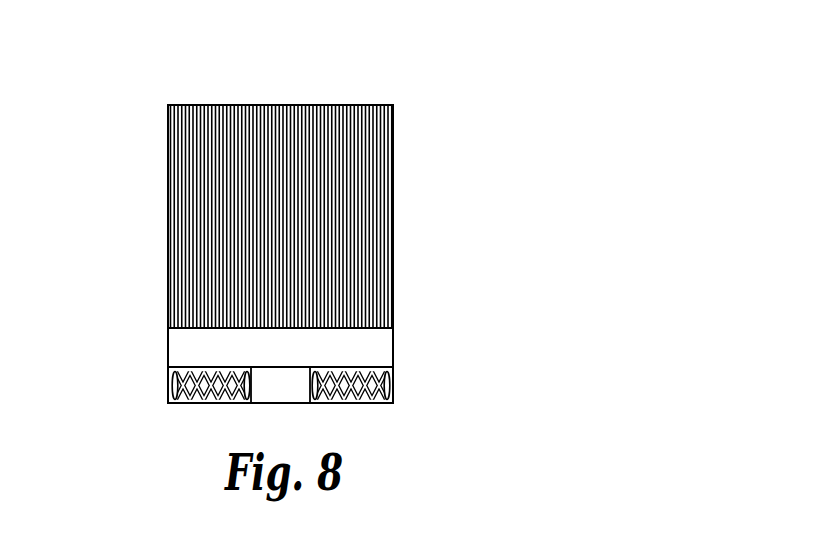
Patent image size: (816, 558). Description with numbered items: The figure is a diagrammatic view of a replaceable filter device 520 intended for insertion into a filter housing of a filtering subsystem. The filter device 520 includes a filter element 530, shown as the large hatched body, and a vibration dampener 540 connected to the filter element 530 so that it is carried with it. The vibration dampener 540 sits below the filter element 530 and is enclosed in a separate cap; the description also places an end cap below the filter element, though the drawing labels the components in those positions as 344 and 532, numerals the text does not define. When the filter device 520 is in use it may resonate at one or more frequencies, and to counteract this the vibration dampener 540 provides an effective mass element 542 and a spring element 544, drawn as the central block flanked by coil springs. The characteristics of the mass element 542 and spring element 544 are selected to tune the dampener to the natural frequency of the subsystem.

The filter device 520 is at (441, 100).
The filter element 530 is at (168, 230).
The end band 344 is at (375, 348).
The biasing spring 532 is at (402, 383).
The vibration dampener 540 is at (152, 387).
The mass element 542 is at (277, 406).
The spring element 544 is at (195, 406).